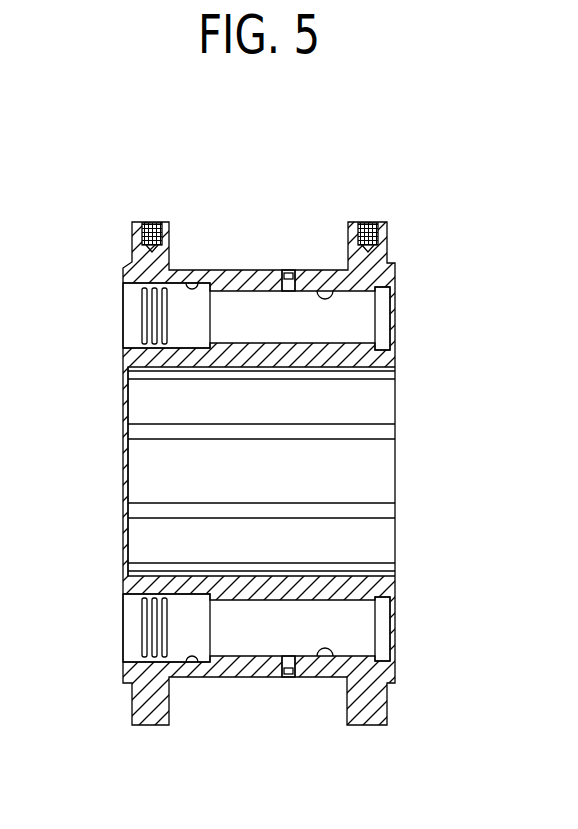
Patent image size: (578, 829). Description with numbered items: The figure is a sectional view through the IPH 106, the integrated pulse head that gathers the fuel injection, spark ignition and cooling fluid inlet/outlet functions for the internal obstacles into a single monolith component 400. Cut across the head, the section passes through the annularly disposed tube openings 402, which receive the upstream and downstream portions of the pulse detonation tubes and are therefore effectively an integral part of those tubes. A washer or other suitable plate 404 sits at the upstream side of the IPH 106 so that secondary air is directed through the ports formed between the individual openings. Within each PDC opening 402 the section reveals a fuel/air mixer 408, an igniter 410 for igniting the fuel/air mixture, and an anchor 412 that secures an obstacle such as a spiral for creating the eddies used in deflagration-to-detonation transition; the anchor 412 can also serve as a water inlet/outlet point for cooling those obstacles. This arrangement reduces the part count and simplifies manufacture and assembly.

The IPH 106 is at (470, 149).
The monolith component 400 is at (125, 266).
The tube opening 402 is at (365, 324).
The plate 404 is at (122, 407).
The fuel/air mixer 408 is at (200, 292).
The igniter 410 is at (287, 270).
The anchor 412 is at (322, 291).